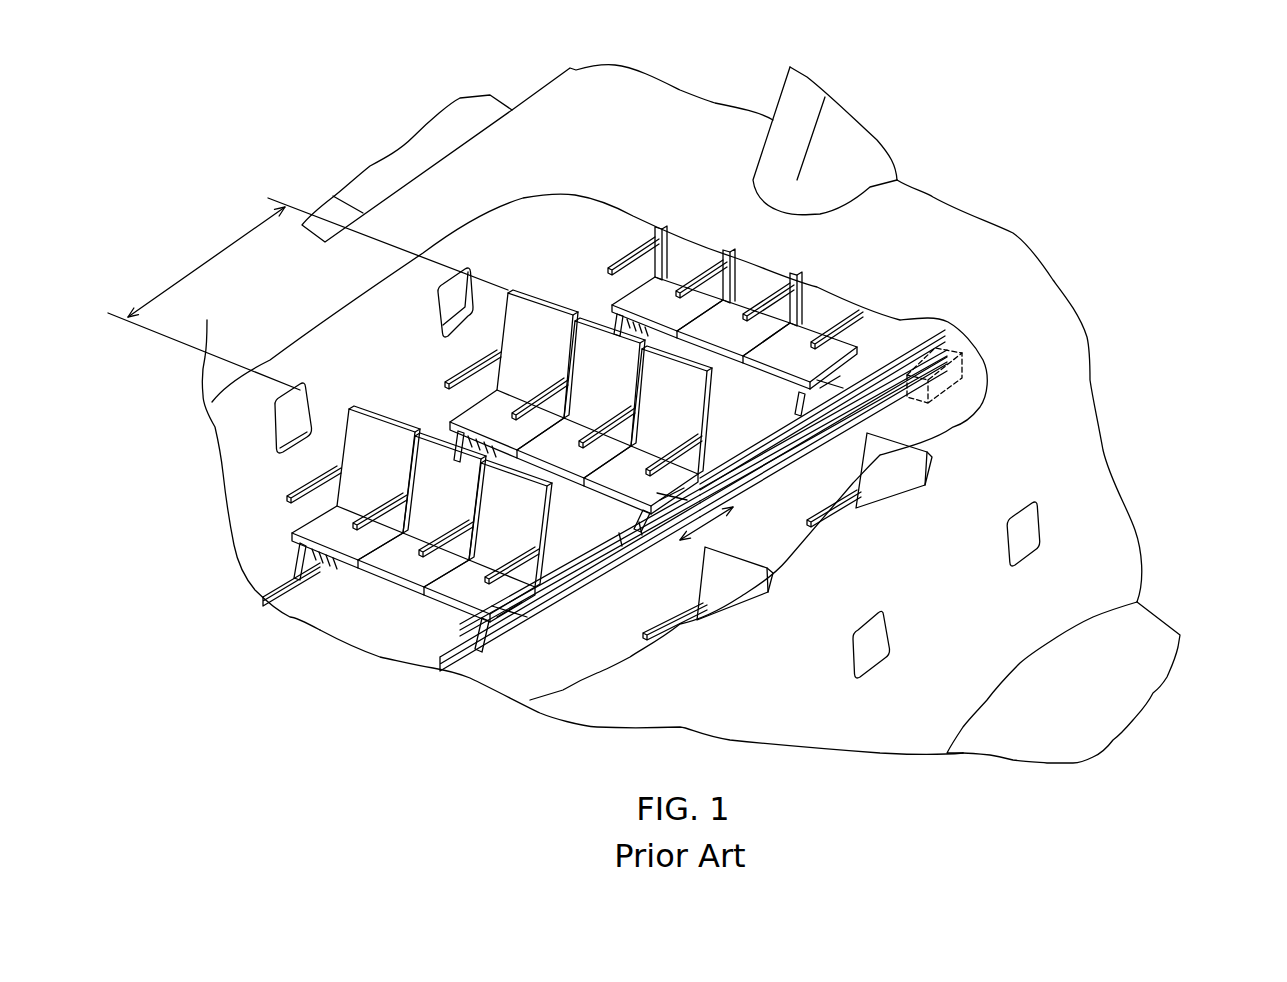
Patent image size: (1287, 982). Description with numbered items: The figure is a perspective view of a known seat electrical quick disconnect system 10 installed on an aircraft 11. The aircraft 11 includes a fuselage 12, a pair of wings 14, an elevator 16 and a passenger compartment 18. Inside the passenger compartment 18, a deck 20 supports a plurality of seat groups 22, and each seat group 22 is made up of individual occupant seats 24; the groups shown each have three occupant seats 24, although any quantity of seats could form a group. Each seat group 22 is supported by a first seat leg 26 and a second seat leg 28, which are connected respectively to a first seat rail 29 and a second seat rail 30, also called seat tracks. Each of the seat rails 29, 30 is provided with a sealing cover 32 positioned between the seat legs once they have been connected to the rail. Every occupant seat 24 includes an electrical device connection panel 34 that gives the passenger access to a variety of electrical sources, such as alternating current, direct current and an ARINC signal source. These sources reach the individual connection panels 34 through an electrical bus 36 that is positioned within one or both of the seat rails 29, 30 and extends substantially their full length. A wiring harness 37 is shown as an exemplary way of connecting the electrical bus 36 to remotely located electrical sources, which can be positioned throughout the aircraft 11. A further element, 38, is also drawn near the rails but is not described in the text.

The seat electrical quick disconnect system 10 is at (427, 653).
The aircraft 11 is at (336, 116).
The fuselage 12 is at (1068, 338).
The wings 14 is at (475, 110).
The elevator 16 is at (870, 150).
The passenger compartment 18 is at (235, 434).
The deck 20 is at (517, 677).
The seat groups 22 is at (488, 412).
The occupant seats 24 is at (531, 292).
The first seat leg 26 is at (283, 566).
The second seat leg 28 is at (800, 392).
The first seat rail 29 is at (289, 606).
The second seat rail 30 is at (603, 552).
The sealing cover 32 is at (766, 436).
The electrical device connection panel 34 is at (458, 373).
The electrical bus 36 is at (645, 549).
The wiring harness 37 is at (897, 388).
The fitting 38 is at (907, 400).